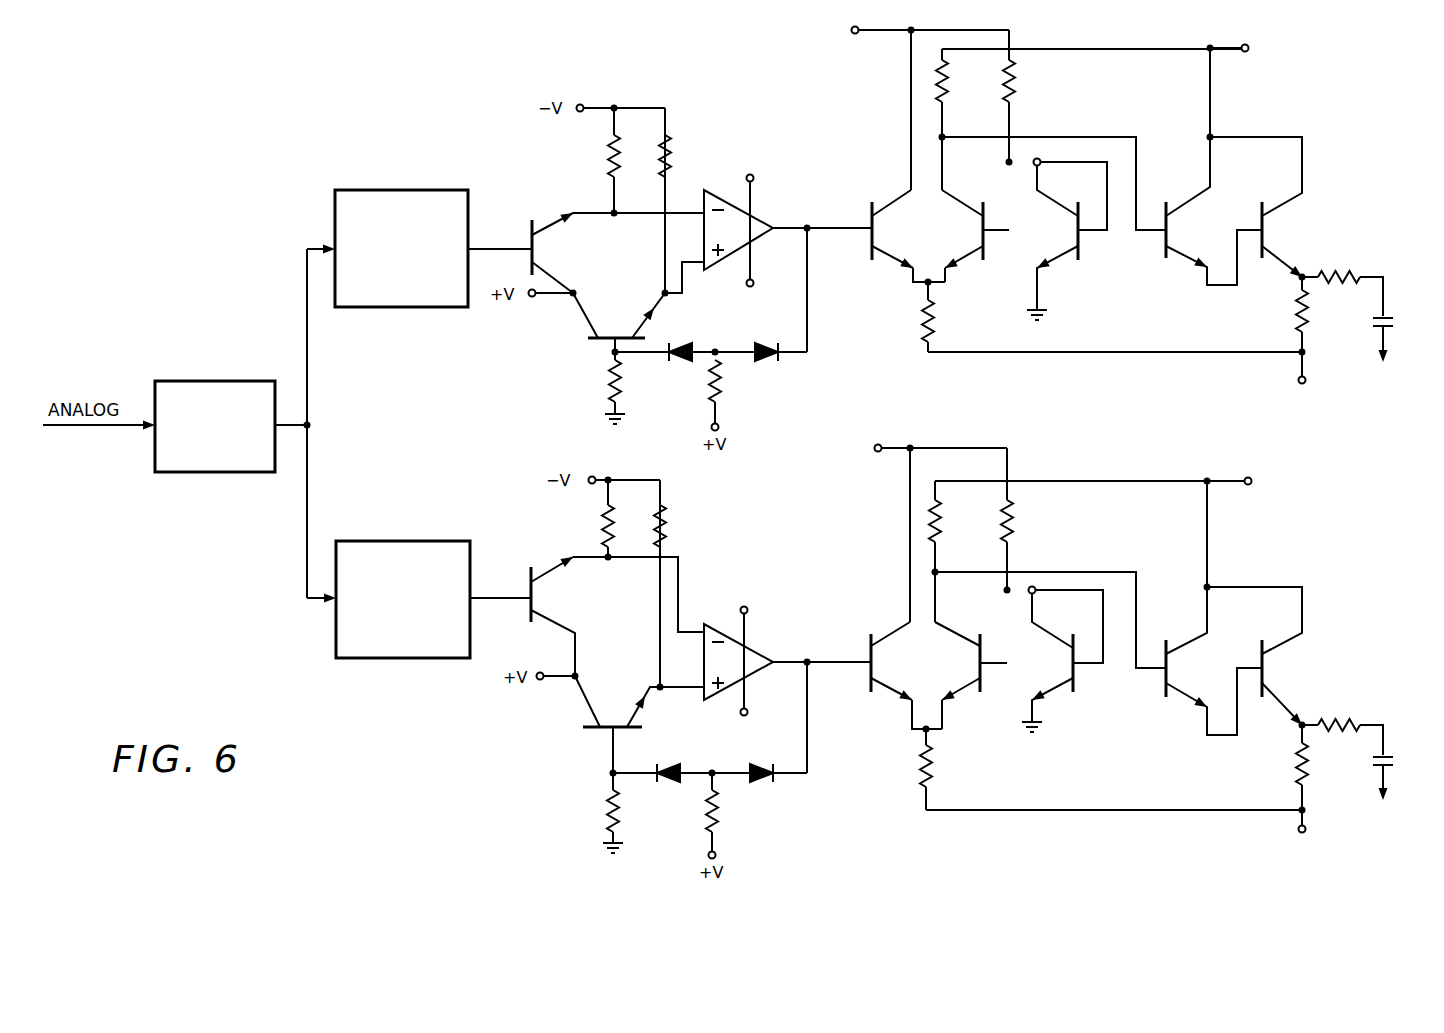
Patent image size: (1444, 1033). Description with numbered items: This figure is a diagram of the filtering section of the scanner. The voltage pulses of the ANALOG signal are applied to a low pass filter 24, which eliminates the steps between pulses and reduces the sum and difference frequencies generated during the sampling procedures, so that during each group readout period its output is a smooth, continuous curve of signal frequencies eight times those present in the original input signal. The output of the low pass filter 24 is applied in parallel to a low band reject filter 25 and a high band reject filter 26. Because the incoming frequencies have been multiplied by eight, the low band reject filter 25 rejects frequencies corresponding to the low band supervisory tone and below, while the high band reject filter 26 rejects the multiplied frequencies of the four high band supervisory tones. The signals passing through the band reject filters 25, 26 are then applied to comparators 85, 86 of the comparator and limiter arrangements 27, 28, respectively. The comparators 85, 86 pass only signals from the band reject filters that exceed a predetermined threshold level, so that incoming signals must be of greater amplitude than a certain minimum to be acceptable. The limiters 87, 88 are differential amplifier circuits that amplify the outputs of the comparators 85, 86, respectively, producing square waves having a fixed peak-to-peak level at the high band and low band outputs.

The low pass filter 24 is at (228, 381).
The low band reject filter 25 is at (397, 190).
The high band reject filter 26 is at (404, 541).
The comparator and limiter arrangement 27 is at (1105, 217).
The comparator and limiter arrangement 28 is at (1109, 651).
The comparator 85 is at (701, 180).
The comparator 86 is at (706, 583).
The limiter 87 is at (1255, 128).
The limiter 88 is at (1250, 574).